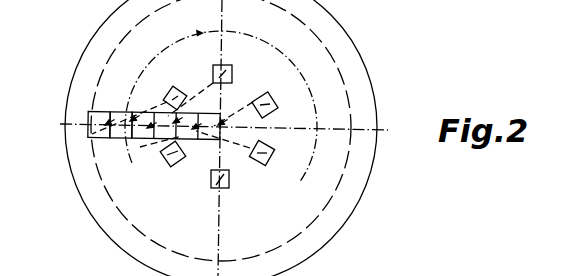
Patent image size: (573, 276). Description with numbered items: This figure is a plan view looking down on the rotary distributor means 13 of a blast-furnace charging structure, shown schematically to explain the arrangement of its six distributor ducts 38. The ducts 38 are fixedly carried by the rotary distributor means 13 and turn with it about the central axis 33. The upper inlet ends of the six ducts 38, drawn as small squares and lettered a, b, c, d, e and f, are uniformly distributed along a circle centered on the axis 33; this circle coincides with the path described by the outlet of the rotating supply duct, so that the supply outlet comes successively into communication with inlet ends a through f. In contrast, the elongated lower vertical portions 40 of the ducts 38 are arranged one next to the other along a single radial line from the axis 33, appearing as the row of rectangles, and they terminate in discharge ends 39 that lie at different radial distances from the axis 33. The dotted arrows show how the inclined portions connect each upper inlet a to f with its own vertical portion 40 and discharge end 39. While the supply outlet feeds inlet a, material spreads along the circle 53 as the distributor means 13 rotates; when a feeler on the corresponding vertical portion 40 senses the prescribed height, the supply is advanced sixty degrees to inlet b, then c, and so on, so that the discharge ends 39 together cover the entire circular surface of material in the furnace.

The rotary distributor means 13 is at (368, 146).
The circle 53 is at (271, 43).
The axis 33 is at (145, 138).
The discharge end 39 is at (88, 138).
The vertical portion 40 is at (110, 138).
The distributor duct 38 is at (264, 95).
The inlet end 38a a is at (177, 87).
The inlet end 38b b is at (229, 67).
The inlet end 38c c is at (278, 107).
The inlet end 38d d is at (275, 160).
The inlet end 38e e is at (228, 188).
The inlet end 38f f is at (177, 162).